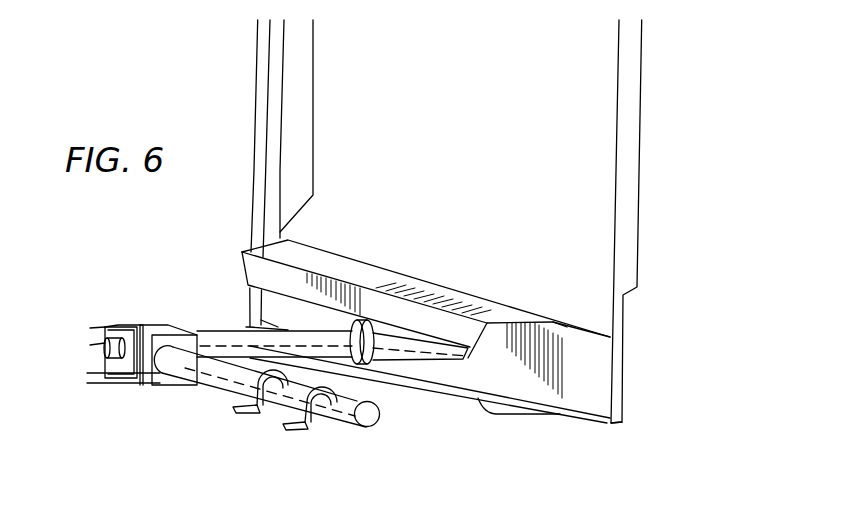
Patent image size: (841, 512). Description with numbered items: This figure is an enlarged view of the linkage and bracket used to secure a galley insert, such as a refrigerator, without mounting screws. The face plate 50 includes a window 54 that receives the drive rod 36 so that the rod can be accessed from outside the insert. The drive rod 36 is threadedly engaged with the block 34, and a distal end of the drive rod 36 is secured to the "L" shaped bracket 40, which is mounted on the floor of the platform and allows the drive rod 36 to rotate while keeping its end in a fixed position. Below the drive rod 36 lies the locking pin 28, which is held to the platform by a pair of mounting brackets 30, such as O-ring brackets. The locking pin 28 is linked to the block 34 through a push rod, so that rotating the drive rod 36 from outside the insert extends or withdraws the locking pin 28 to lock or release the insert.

The face plate 50 is at (641, 151).
The window 54 is at (463, 357).
The drive rod 36 is at (232, 337).
The block 34 is at (140, 325).
The "L" shaped bracket 40 is at (103, 373).
The locking pin 28 is at (220, 382).
The mounting brackets 30 is at (288, 426).